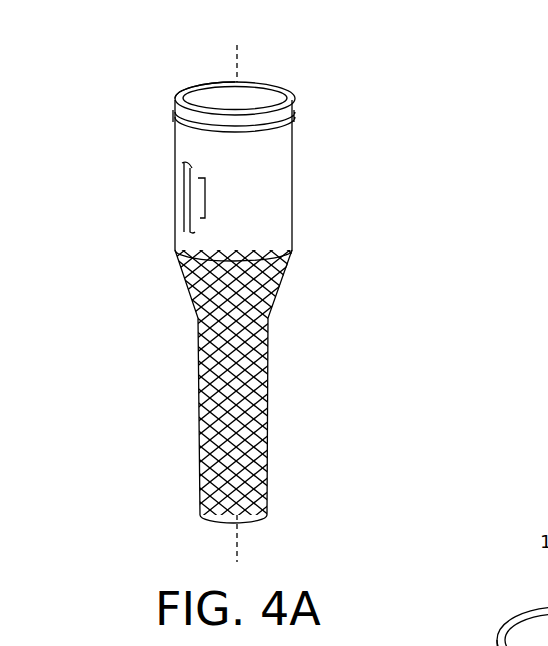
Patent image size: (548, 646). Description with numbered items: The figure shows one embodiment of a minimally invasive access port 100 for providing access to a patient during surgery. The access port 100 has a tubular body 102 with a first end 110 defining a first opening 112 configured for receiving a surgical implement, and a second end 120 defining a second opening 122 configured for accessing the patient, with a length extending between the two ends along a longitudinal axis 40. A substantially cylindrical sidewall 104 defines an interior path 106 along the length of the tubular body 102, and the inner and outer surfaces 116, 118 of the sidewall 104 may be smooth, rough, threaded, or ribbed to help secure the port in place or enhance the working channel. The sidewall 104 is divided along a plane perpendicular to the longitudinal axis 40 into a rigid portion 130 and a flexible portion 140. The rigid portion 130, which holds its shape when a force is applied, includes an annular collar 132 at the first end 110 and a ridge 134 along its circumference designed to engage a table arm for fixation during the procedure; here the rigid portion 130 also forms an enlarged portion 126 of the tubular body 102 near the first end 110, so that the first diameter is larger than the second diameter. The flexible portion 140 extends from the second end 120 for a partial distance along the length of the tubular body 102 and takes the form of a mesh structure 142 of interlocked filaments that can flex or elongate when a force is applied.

In FIG. 4A, the access port 100 is at (118, 95).
In FIG. 4A, the tubular body 102 is at (142, 300).
In FIG. 4A, the sidewall 104 is at (175, 228).
In FIG. 4A, the interior path 106 is at (216, 70).
In FIG. 4A, the first end 110 is at (290, 92).
In FIG. 4A, the first opening 112 is at (205, 95).
In FIG. 4B, the first opening 112 is at (540, 625).
In FIG. 4A, the inner surface 116 is at (257, 100).
In FIG. 4A, the outer surface 118 is at (233, 383).
In FIG. 4A, the second end 120 is at (215, 517).
In FIG. 4A, the second opening 122 is at (255, 517).
In FIG. 4A, the enlarged portion 126 is at (292, 187).
In FIG. 4A, the rigid portion 130 is at (205, 172).
In FIG. 4A, the annular collar 132 is at (270, 170).
In FIG. 4A, the ridge 134 is at (295, 127).
In FIG. 4A, the flexible portion 140 is at (212, 393).
In FIG. 4A, the mesh structure 142 is at (268, 337).
In FIG. 4A, the longitudinal axis 40 is at (237, 540).